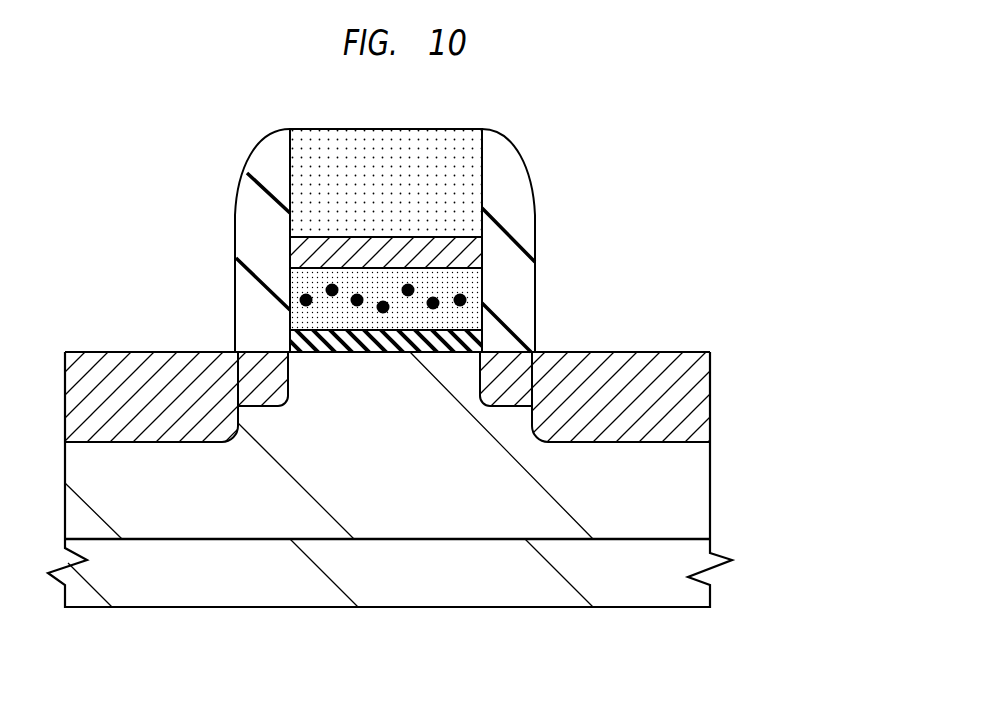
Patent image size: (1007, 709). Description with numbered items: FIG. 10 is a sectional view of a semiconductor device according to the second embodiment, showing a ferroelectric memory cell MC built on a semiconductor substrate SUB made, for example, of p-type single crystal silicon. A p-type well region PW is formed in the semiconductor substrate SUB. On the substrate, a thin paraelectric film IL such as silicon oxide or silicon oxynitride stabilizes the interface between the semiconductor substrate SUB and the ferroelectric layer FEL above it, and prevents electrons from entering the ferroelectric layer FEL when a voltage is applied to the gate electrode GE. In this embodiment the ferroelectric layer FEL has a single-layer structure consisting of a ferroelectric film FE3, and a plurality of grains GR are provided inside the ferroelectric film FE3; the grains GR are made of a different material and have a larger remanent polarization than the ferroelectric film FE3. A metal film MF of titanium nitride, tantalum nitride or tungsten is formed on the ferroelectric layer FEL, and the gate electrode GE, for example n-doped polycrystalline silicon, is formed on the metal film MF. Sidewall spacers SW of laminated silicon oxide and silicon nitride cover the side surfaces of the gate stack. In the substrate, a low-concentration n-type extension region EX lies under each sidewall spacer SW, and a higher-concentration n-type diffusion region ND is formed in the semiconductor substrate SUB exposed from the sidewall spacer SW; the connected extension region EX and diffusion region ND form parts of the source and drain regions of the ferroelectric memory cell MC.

The ferroelectric memory cell MC is at (142, 168).
The sidewall spacer SW is at (262, 176).
The gate electrode GE is at (382, 153).
The metal film MF is at (308, 253).
The ferroelectric layer FEL is at (498, 305).
The ferroelectric film FE3 is at (482, 318).
The grains GR is at (482, 296).
The paraelectric film IL is at (313, 344).
The diffusion region ND is at (148, 417).
The extension region EX is at (263, 393).
The well region PW is at (697, 493).
The semiconductor substrate SUB is at (697, 593).